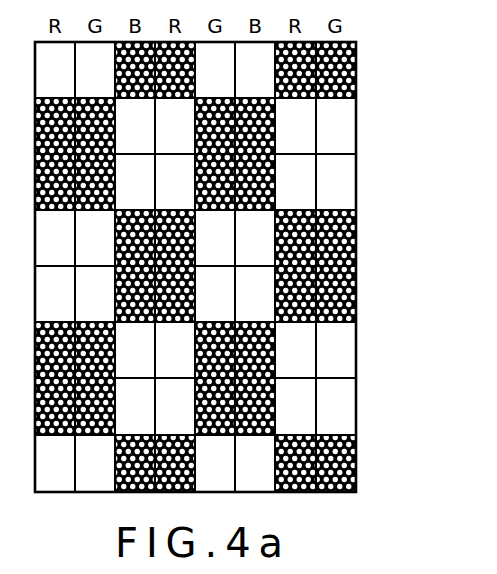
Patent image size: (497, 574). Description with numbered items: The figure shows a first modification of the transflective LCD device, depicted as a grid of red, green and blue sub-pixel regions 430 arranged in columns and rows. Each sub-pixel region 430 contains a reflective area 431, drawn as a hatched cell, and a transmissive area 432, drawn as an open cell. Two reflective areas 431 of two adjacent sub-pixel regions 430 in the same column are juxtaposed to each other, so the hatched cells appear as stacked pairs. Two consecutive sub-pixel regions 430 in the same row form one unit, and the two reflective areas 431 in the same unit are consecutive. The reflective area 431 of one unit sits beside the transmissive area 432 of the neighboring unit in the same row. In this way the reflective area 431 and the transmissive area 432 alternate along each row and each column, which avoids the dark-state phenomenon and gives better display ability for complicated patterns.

The sub-pixel region 430 is at (424, 178).
The reflective area 431 is at (357, 238).
The transmissive area 432 is at (343, 181).